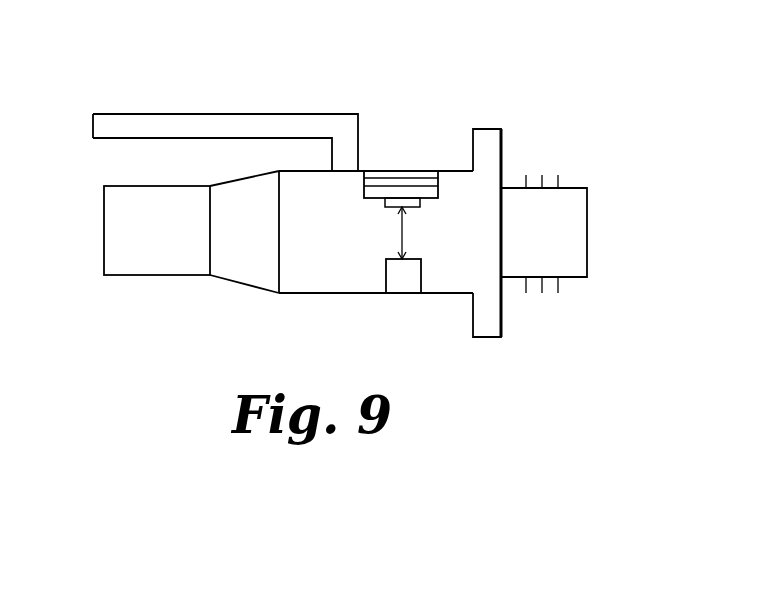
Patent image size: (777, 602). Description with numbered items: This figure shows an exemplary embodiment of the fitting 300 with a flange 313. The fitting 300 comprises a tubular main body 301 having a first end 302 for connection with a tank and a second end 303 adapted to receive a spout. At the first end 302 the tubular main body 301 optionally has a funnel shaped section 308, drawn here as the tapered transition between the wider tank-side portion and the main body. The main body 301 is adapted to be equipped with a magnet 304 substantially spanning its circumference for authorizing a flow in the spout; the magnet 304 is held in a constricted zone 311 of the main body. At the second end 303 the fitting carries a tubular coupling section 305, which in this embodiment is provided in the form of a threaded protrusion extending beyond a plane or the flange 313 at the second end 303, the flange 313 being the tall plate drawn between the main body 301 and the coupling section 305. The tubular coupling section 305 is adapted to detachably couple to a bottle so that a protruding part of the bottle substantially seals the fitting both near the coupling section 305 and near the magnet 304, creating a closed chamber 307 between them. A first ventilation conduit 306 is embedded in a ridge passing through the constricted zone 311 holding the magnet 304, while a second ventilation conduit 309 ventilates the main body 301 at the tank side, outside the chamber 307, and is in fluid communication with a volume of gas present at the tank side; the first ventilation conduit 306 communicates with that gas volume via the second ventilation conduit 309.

The fitting 300 is at (112, 29).
The tubular main body 301 is at (316, 293).
The first end 302 is at (107, 226).
The second end 303 is at (501, 171).
The magnet 304 is at (405, 285).
The tubular coupling section 305 is at (580, 239).
The first ventilation conduit 306 is at (401, 171).
The closed chamber 307 is at (463, 243).
The funnel shaped section 308 is at (230, 281).
The second ventilation conduit 309 is at (93, 124).
The constricted zone 311 is at (384, 233).
The flange 313 is at (489, 135).